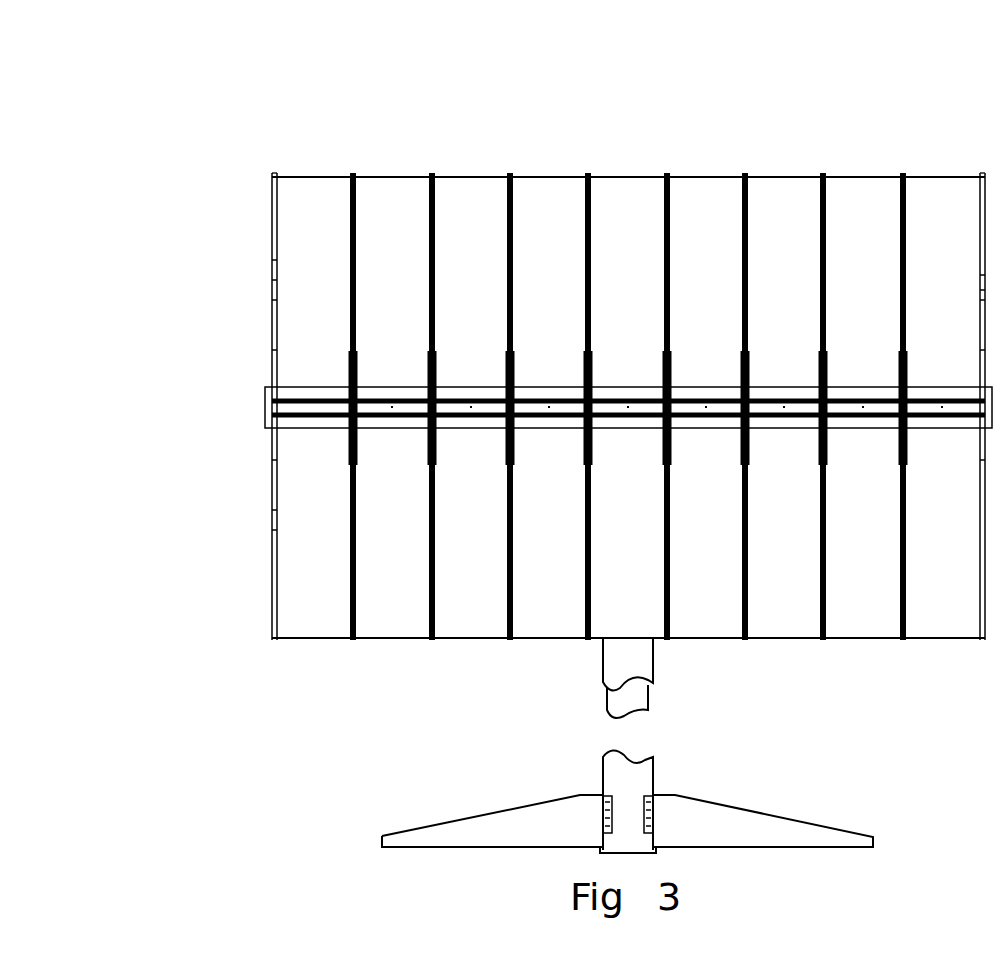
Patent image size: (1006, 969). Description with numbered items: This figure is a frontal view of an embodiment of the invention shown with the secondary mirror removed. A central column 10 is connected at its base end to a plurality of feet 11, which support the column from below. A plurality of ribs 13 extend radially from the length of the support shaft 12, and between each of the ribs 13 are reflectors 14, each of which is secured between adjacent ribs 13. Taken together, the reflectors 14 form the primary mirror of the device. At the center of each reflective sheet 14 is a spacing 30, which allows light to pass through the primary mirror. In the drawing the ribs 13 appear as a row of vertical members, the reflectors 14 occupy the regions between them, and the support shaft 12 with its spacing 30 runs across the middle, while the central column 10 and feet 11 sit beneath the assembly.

The central column 10 is at (655, 777).
The feet 11 is at (725, 828).
The support shaft 12 is at (317, 387).
The ribs 13 is at (432, 177).
The reflectors 14 is at (703, 193).
The spacing 30 is at (313, 407).